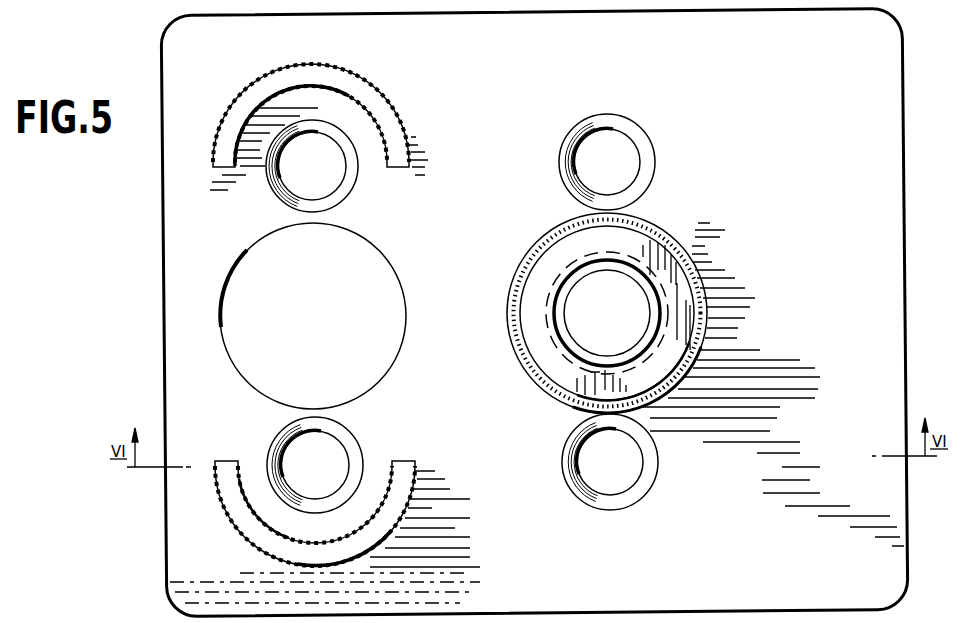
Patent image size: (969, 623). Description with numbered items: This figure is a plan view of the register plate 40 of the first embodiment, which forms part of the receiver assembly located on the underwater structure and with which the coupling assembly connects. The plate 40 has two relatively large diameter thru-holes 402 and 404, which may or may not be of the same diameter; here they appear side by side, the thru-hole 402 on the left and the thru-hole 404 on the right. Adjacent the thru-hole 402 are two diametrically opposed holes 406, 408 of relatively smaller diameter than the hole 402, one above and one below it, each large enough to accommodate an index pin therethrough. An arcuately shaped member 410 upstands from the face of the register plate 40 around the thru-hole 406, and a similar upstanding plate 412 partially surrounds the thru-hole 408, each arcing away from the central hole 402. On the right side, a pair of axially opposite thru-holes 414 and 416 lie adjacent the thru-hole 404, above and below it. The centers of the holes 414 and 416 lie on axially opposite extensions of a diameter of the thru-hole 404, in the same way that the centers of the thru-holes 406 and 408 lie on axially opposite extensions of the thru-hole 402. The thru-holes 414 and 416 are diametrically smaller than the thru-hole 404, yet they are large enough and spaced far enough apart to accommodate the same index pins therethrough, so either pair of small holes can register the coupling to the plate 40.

The register plate 40 is at (165, 535).
The thru-hole 402 is at (406, 318).
The thru-hole 404 is at (532, 260).
The hole 406 is at (334, 183).
The hole 408 is at (336, 461).
The arcuately shaped member 410 is at (377, 110).
The upstanding plate 412 is at (404, 509).
The thru-hole 414 is at (626, 138).
The thru-hole 416 is at (642, 464).